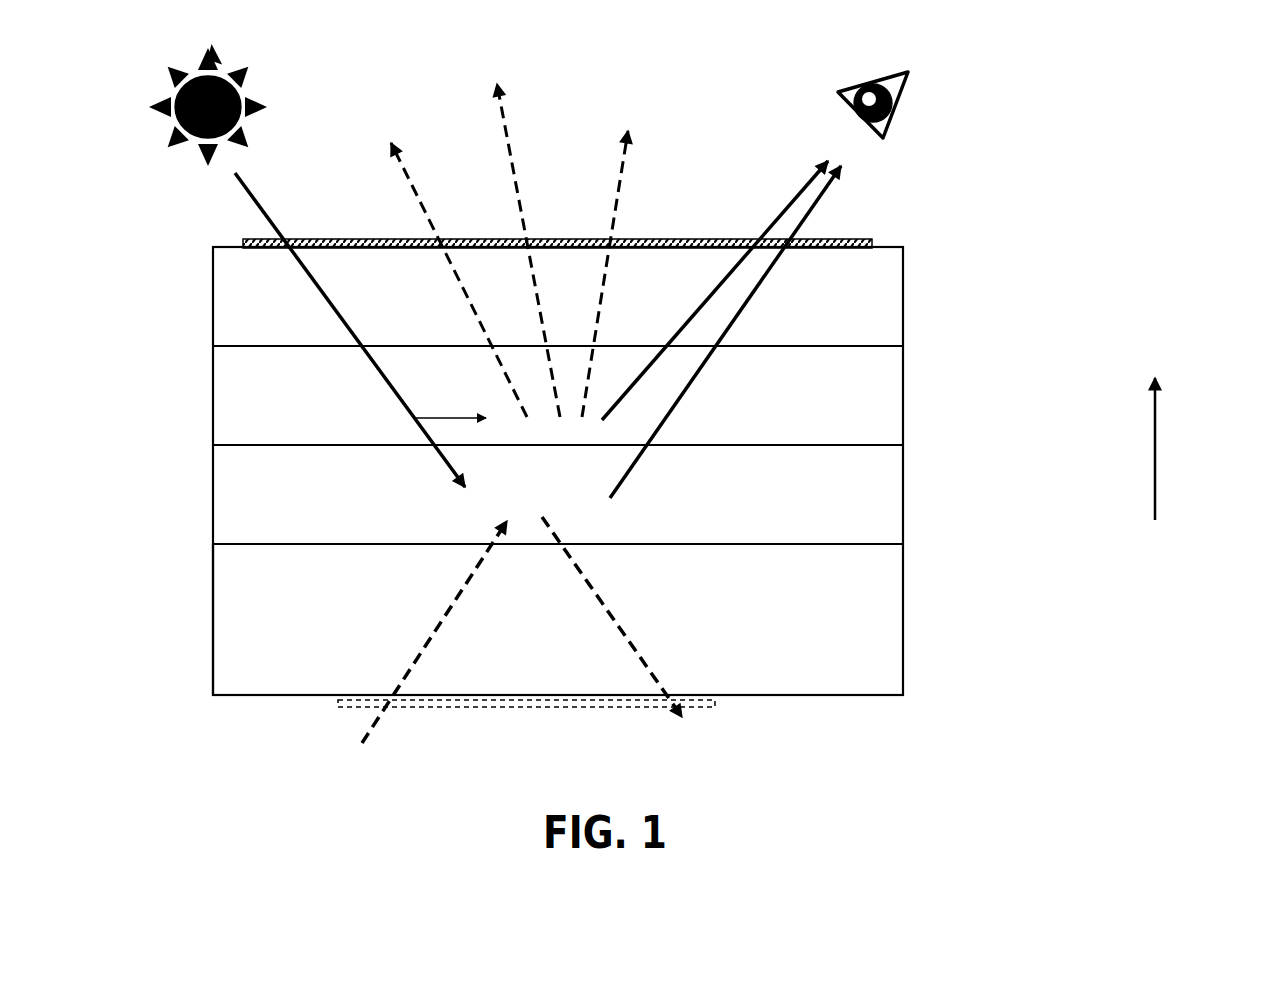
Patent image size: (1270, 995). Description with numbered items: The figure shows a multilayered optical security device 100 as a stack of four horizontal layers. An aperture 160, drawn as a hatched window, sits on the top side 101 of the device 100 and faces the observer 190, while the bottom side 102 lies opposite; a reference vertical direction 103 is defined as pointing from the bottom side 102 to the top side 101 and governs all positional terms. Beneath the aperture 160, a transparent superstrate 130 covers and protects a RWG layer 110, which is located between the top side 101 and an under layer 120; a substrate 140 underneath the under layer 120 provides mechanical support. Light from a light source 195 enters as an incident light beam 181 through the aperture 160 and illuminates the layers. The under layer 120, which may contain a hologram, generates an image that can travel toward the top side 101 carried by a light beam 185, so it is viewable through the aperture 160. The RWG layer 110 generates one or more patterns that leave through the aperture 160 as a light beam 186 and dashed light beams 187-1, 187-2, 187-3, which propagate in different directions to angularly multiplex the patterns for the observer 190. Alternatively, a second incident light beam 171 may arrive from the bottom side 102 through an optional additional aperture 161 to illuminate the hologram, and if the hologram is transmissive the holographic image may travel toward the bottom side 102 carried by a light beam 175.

The multilayered optical security device 100 is at (972, 636).
The top side 101 is at (889, 242).
The bottom side 102 is at (819, 699).
The reference vertical direction 103 is at (1148, 482).
The RWG layer 110 is at (503, 412).
The under layer 120 is at (503, 512).
The superstrate 130 is at (503, 316).
The substrate 140 is at (486, 619).
The aperture 160 is at (557, 206).
The additional aperture 161 is at (526, 742).
The second incident light beam 171 is at (432, 632).
The light beam 175 is at (587, 580).
The incident light beam 181 is at (297, 264).
The light beam 185 is at (695, 380).
The light beam 186 is at (703, 303).
The light beam 187-1 is at (615, 200).
The light beam 187-2 is at (516, 193).
The light beam 187-3 is at (425, 207).
The observer 190 is at (902, 100).
The light source 195 is at (178, 117).